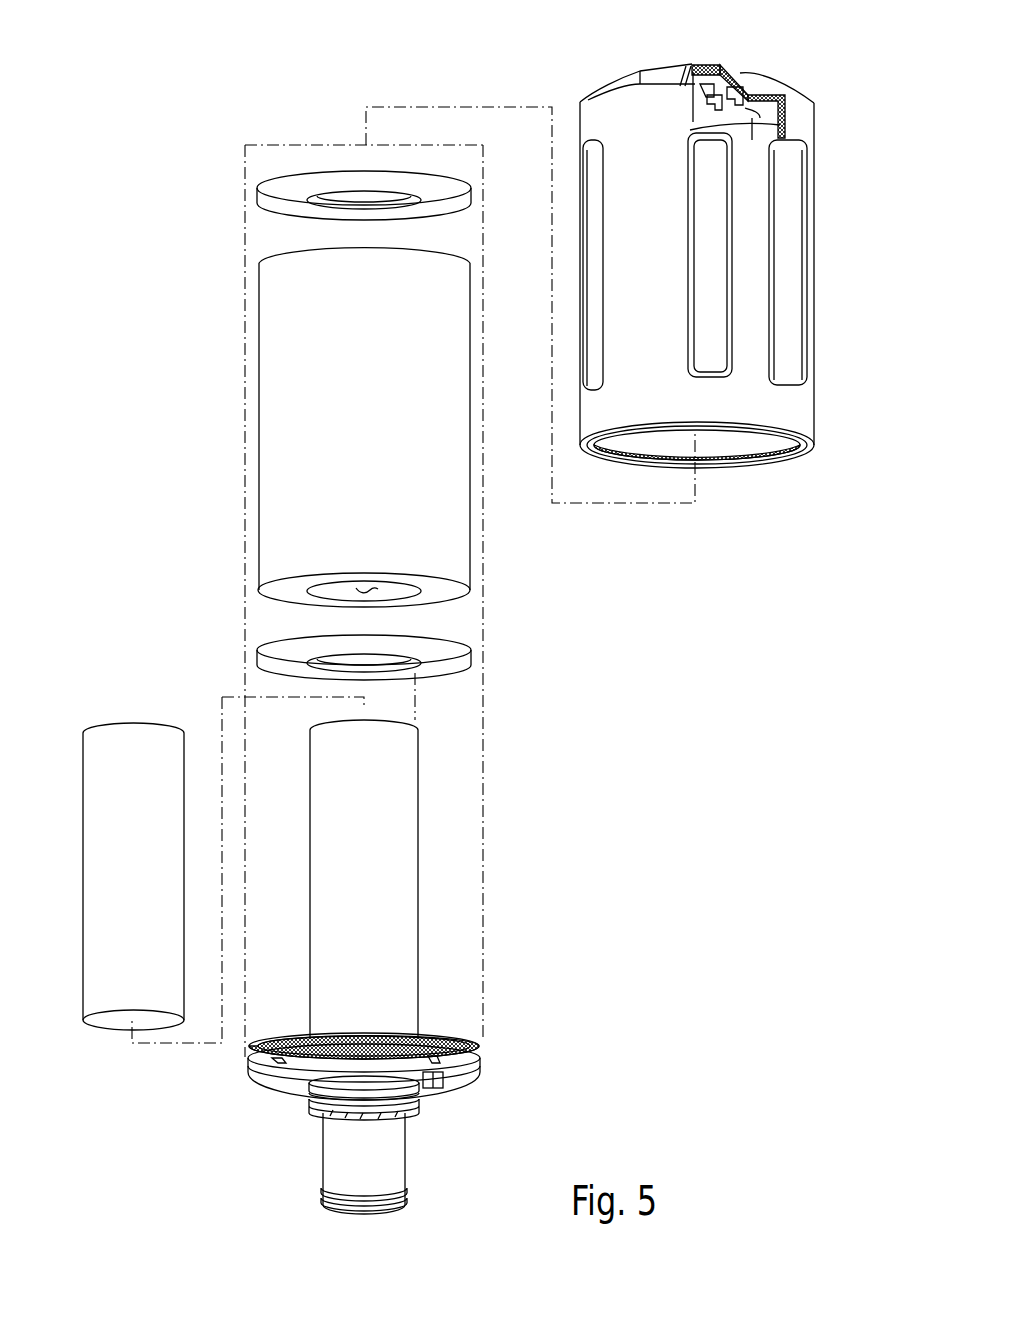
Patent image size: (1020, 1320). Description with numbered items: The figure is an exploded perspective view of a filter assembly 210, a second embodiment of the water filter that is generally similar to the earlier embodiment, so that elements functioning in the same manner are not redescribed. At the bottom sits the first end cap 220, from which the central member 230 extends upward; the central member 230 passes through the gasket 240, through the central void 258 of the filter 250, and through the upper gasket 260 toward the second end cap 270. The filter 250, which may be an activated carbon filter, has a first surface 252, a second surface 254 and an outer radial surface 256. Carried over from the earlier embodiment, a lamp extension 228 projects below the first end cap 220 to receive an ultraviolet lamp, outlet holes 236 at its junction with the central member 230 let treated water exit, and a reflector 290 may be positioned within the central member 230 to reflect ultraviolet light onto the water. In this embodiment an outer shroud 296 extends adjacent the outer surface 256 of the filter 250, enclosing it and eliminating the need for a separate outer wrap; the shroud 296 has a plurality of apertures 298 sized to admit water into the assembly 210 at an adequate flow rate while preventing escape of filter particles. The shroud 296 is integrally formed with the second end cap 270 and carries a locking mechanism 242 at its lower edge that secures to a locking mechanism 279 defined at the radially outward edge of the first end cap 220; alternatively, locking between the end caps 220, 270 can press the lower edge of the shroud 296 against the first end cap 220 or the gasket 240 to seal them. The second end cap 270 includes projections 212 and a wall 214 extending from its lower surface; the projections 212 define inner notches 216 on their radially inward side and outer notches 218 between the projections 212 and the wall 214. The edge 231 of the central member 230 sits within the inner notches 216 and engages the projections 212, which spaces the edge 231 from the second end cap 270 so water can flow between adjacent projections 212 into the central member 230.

The filter assembly 210 is at (137, 233).
The projections 212 is at (741, 90).
The wall 214 is at (752, 117).
The inner notch 216 is at (714, 88).
The outer notch 218 is at (750, 110).
The first end cap 220 is at (418, 1099).
The stem 228 is at (385, 1162).
The central member 230 is at (399, 869).
The edge 231 is at (333, 722).
The threads 236 is at (326, 1118).
The gasket 240 is at (468, 657).
The locking mechanism 242 is at (738, 458).
The filter 250 is at (404, 431).
The bottom of cartridge 252 is at (445, 590).
The top of cartridge 254 is at (448, 255).
The outer surface 256 is at (470, 345).
The opening 258 is at (357, 598).
The upper gasket 260 is at (292, 206).
The second end cap 270 is at (678, 260).
The locking mechanism 279 is at (446, 1044).
The cylinder 290 is at (122, 780).
The outer shroud 296 is at (808, 327).
The apertures 298 is at (787, 350).